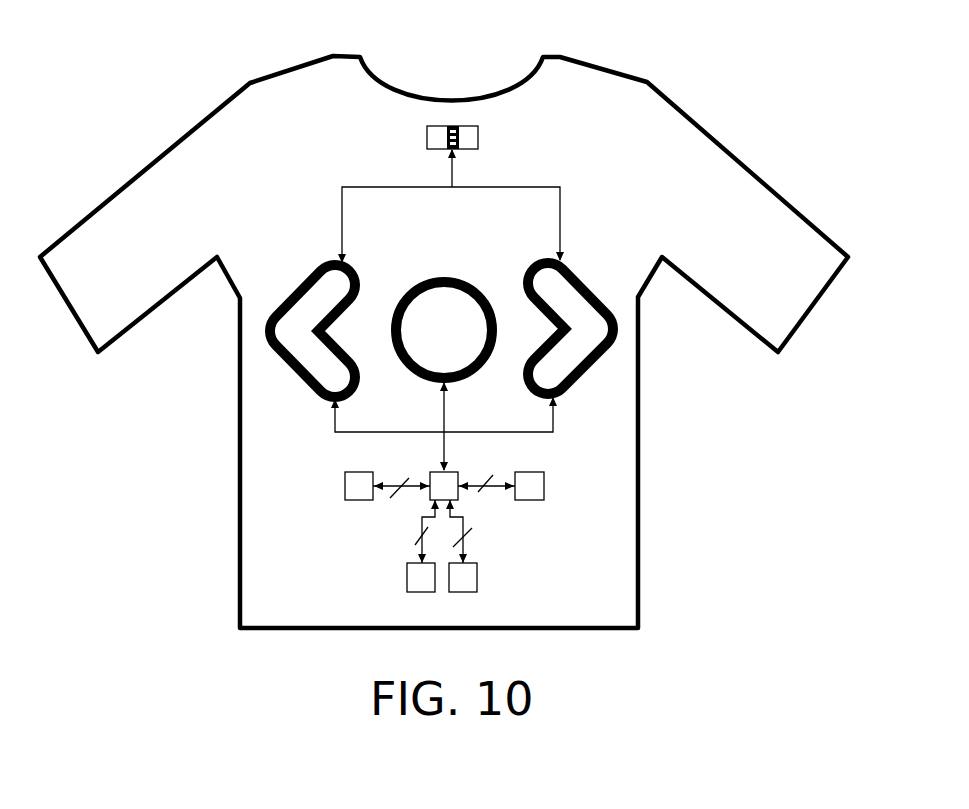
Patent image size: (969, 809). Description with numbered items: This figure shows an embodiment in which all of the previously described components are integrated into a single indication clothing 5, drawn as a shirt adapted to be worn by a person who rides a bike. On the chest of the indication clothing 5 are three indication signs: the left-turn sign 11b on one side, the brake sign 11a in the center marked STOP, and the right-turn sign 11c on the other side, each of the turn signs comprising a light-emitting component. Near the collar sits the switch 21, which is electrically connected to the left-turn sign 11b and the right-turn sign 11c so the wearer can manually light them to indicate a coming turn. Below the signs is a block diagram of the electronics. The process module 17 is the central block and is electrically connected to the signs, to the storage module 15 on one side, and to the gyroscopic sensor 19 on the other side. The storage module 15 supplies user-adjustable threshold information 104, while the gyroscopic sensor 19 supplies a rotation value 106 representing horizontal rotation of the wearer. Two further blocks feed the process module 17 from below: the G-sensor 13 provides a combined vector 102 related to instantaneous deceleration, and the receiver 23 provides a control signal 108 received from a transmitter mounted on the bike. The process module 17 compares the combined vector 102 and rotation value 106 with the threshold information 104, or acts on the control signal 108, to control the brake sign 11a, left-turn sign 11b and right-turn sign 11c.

The indication clothing 5 is at (668, 98).
The switch 21 is at (478, 138).
The left-turn sign 11b is at (297, 282).
The brake sign 11a is at (414, 282).
The right-turn sign 11c is at (595, 288).
The storage module 15 is at (357, 471).
The process module 17 is at (458, 476).
The gyroscopic sensor 19 is at (545, 478).
The G-sensor 13 is at (418, 591).
The receiver 23 is at (463, 591).
The threshold information 104 is at (403, 485).
The rotation value 106 is at (487, 488).
The combined vector 102 is at (420, 536).
The control signal 108 is at (463, 537).